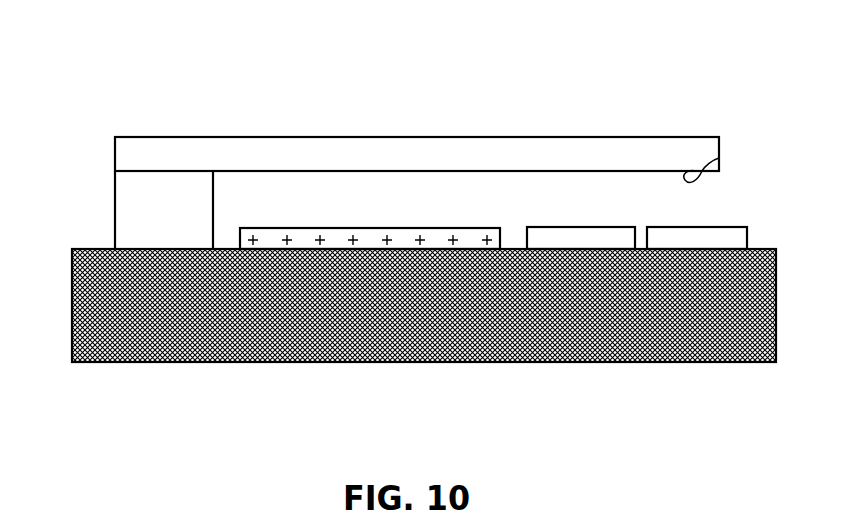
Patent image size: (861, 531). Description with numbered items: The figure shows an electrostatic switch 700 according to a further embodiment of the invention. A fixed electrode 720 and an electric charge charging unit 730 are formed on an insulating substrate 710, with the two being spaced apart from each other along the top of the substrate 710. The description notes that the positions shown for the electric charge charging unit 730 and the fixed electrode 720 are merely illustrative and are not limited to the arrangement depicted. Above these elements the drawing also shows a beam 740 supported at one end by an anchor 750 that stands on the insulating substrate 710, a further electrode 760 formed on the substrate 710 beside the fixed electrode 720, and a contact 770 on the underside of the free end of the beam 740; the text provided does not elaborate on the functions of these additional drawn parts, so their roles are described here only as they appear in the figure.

The MEMS device 700 is at (90, 40).
The insulating substrate 710 is at (687, 340).
The fixed electrode 720 is at (613, 238).
The electric charge charging unit 730 is at (273, 233).
The beam 740 is at (192, 155).
The anchor 750 is at (145, 217).
The electrode 760 is at (727, 237).
The contact 770 is at (720, 168).